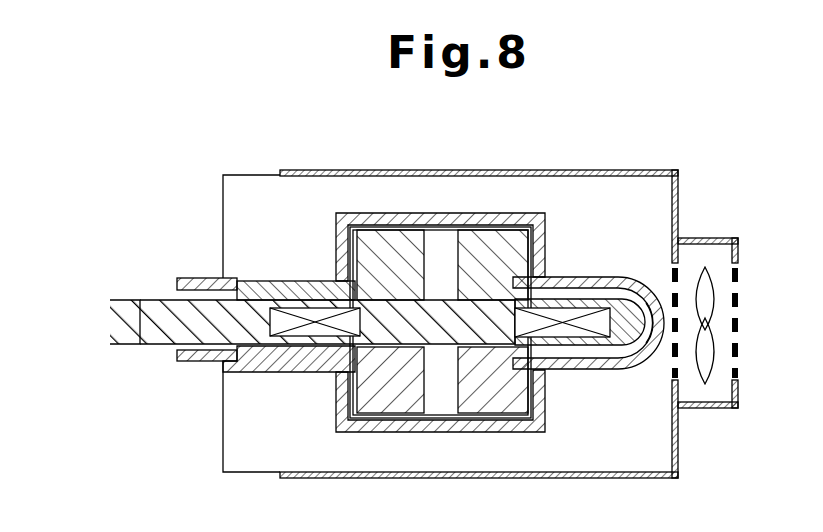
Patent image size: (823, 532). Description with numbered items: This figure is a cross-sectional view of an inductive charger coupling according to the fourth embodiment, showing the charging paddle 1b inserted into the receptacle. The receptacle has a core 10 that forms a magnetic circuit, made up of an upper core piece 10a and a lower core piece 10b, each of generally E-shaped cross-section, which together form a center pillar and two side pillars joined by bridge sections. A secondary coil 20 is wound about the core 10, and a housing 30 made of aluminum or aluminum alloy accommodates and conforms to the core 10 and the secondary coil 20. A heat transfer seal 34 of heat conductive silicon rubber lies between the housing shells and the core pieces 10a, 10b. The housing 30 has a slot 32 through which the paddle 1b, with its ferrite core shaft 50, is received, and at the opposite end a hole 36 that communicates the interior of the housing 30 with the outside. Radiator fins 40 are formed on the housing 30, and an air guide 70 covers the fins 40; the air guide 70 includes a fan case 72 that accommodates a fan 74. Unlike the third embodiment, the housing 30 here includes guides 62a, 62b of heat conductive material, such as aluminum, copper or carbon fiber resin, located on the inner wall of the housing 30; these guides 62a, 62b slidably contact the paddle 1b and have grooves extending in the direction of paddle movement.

The charging paddle 1b is at (104, 320).
The core 10 is at (397, 226).
The upper core piece 10a is at (472, 244).
The lower core piece 10b is at (392, 395).
The secondary coil 20 is at (263, 360).
The housing 30 is at (517, 225).
The slot 32 is at (167, 289).
The heat transfer seal 34 is at (522, 222).
The hole 36 is at (660, 338).
The radiator fins 40 is at (250, 186).
The ferrite core shaft 50 is at (447, 325).
The guide 62a is at (270, 290).
The guide 62b is at (298, 350).
The air guide 70 is at (598, 171).
The fan case 72 is at (706, 240).
The fan 74 is at (721, 270).